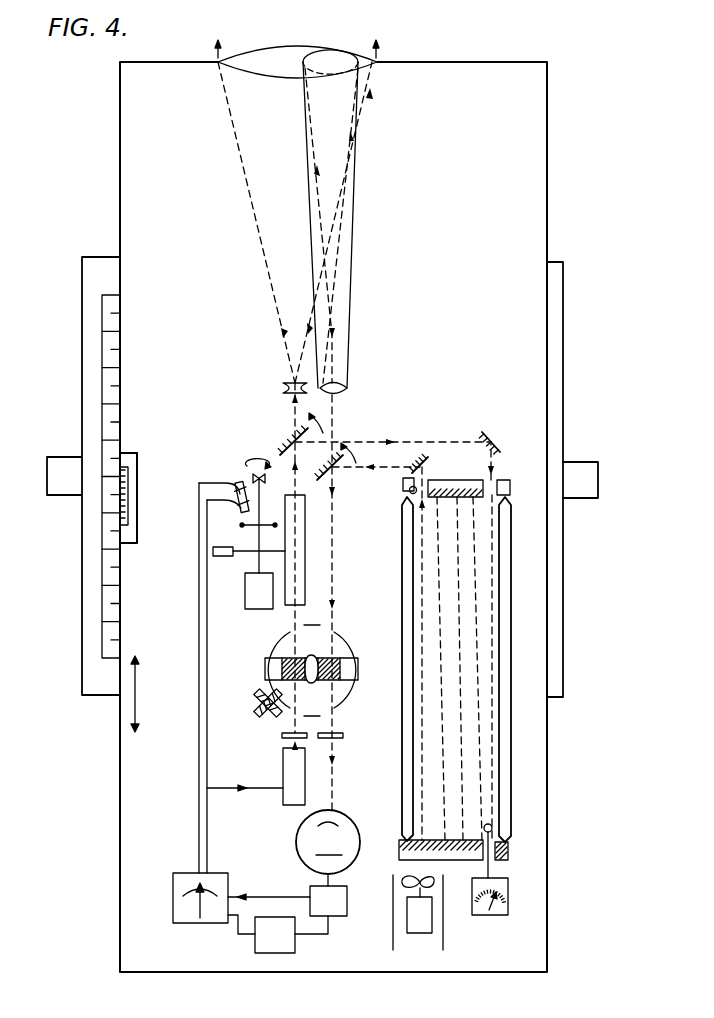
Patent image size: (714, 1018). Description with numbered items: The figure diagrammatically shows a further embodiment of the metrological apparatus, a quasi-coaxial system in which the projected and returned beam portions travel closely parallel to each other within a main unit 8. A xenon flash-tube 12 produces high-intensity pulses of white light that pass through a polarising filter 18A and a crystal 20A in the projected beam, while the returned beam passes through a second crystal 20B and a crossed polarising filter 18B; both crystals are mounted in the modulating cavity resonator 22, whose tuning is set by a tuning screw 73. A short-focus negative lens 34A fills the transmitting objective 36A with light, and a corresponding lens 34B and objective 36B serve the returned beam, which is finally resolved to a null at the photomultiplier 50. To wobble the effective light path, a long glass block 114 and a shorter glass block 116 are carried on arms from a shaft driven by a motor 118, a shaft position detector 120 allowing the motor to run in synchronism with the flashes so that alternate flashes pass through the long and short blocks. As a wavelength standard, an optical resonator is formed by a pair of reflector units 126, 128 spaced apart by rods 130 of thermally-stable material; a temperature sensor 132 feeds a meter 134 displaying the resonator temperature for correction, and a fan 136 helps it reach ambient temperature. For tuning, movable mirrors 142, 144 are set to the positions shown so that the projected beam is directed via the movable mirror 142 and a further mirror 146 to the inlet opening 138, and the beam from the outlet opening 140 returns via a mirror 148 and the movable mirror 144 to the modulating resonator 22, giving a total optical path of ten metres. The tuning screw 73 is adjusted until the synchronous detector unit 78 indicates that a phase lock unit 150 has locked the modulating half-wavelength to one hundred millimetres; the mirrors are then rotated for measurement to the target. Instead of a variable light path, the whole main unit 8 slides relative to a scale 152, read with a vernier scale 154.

The main unit 8 is at (549, 210).
The xenon flash-tube 12 is at (282, 796).
The polarising filter 18A is at (283, 740).
The polarising filter 18B is at (343, 738).
The crystal 20A is at (283, 660).
The crystal 20B is at (335, 658).
The modulating cavity resonator 22 is at (343, 690).
The short-focus negative lens 34A is at (283, 388).
The short-focus negative lens 34B is at (345, 390).
The transmitting objective 36A is at (270, 56).
The objective 36B is at (346, 60).
The photomultiplier 50 is at (352, 835).
The tuning screw 73 is at (257, 706).
The synchronous detector unit 78 is at (190, 926).
The glass block 114 is at (305, 549).
The glass block 116 is at (213, 551).
The motor 118 is at (245, 585).
The shaft position detector 120 is at (238, 510).
The reflector unit 126 is at (468, 473).
The reflector unit 128 is at (452, 855).
The rods 130 is at (402, 585).
The temperature sensor 132 is at (491, 826).
The meter 134 is at (500, 878).
The fan 136 is at (397, 881).
The inlet opening 138 is at (504, 483).
The outlet opening 140 is at (408, 491).
The movable mirror 142 is at (292, 440).
The movable mirror 144 is at (327, 470).
The mirror 146 is at (491, 440).
The mirror 148 is at (420, 462).
The phase lock unit 150 is at (283, 945).
The scale 152 is at (88, 617).
The vernier scale 154 is at (137, 475).